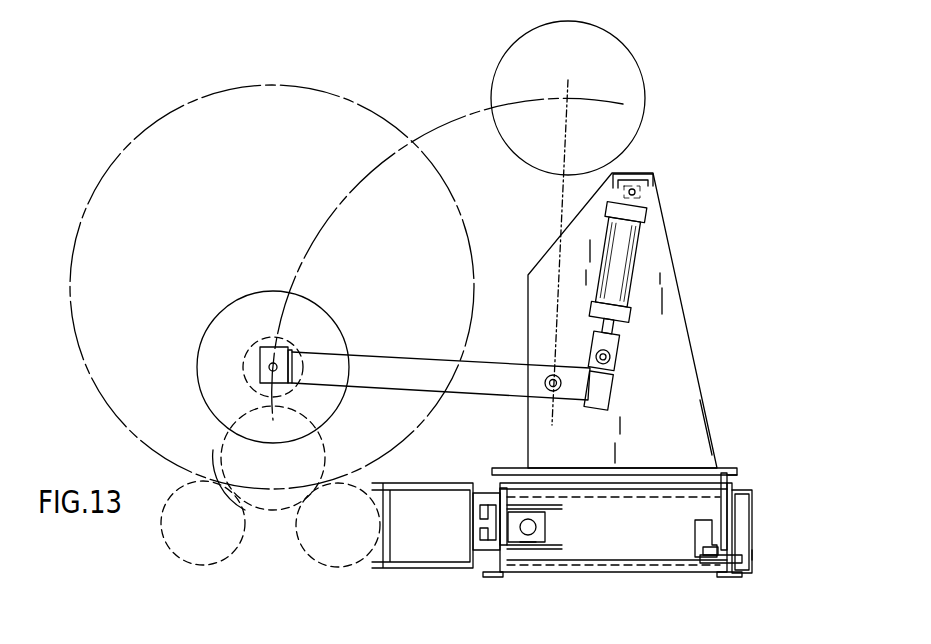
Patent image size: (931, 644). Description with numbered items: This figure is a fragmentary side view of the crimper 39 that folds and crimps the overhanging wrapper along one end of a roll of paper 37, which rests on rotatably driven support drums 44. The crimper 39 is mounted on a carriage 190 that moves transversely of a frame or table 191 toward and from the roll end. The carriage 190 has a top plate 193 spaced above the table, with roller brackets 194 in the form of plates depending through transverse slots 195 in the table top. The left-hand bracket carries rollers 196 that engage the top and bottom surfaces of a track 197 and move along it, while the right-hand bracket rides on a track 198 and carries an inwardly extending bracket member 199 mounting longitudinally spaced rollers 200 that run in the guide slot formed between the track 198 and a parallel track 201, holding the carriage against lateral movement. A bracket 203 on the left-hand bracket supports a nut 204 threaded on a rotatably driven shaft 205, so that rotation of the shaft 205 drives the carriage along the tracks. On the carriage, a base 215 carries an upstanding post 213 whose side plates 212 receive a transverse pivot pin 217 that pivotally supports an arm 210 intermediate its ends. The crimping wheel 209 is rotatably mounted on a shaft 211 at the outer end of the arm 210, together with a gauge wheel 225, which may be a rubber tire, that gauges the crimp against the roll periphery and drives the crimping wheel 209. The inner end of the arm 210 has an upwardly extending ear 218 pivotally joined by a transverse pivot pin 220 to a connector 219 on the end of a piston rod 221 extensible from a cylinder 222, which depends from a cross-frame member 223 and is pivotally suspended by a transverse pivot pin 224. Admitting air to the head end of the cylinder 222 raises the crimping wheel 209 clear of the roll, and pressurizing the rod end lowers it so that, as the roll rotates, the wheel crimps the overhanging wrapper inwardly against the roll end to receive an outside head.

The roll of paper 37 is at (120, 155).
The crimper 39 is at (670, 227).
The support drums 44 is at (173, 548).
The carriage 190 is at (513, 467).
The frame or table 191 is at (385, 482).
The top plate 193 is at (730, 470).
The roller brackets 194 is at (450, 488).
The transverse slots 195 is at (498, 483).
The rollers 196 is at (480, 512).
The track 197 is at (478, 536).
The track 198 is at (752, 556).
The bracket member 199 is at (712, 521).
The rollers 200 is at (712, 563).
The track 201 is at (703, 550).
The bracket 203 is at (547, 518).
The nut 204 is at (536, 528).
The shaft 205 is at (530, 541).
The crimping wheel 209 is at (217, 315).
The arm 210 is at (410, 357).
The shaft 211 is at (278, 365).
The side plates 212 is at (693, 371).
The upstanding post 213 is at (723, 432).
The base 215 is at (722, 468).
The transverse pivot pin 217 is at (557, 372).
The ear 218 is at (615, 374).
The connector 219 is at (620, 340).
The transverse pivot pin 220 is at (610, 358).
The piston rod 221 is at (614, 325).
The cylinder 222 is at (640, 272).
The cross-frame member 223 is at (655, 178).
The transverse pivot pin 224 is at (643, 175).
The gauge wheel 225 is at (243, 362).